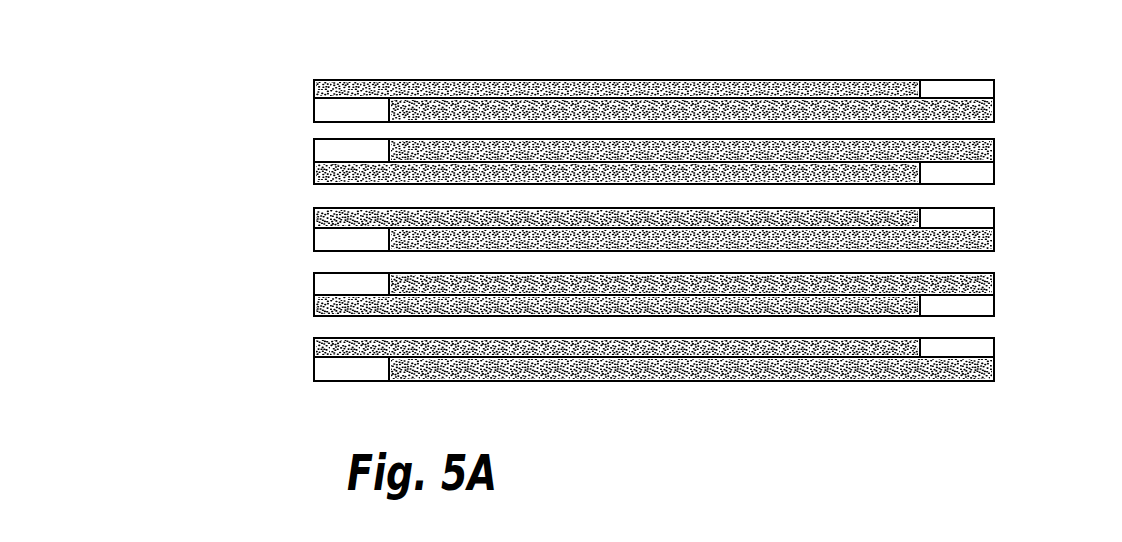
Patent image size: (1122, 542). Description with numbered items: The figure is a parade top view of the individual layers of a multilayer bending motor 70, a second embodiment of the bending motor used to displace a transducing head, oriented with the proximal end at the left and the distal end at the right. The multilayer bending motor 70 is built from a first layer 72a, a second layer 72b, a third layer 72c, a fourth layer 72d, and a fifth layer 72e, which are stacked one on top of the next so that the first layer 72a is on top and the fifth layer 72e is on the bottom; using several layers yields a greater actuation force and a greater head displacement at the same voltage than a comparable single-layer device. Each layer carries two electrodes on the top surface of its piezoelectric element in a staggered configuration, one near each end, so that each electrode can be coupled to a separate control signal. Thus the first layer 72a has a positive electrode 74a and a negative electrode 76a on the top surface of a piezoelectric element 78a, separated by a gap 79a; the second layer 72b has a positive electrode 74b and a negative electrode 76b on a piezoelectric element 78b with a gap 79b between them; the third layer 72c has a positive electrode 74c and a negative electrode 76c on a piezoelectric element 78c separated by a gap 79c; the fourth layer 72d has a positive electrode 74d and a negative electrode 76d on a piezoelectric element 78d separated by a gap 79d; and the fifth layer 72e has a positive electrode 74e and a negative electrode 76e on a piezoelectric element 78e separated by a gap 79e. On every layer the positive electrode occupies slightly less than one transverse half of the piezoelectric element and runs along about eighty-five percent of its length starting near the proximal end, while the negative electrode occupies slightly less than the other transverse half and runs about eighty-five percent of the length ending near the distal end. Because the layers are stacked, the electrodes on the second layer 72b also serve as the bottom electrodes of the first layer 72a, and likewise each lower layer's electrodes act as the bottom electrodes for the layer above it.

The multilayer bending motor 70 is at (392, 50).
The first layer 72a is at (621, 82).
The second layer 72b is at (619, 116).
The third layer 72c is at (619, 148).
The fourth layer 72d is at (624, 340).
The fifth layer 72e is at (621, 373).
The positive electrode 74a is at (331, 86).
The positive electrode 74b is at (316, 176).
The positive electrode 74c is at (315, 217).
The positive electrode 74d is at (316, 308).
The positive electrode 74e is at (316, 350).
The negative electrode 76a is at (990, 112).
The negative electrode 76b is at (990, 148).
The negative electrode 76c is at (992, 243).
The negative electrode 76d is at (993, 280).
The negative electrode 76e is at (992, 372).
The piezoelectric element 78a is at (982, 90).
The piezoelectric element 78b is at (987, 177).
The piezoelectric element 78c is at (982, 217).
The piezoelectric element 78d is at (985, 305).
The piezoelectric element 78e is at (988, 347).
The gap 79a is at (460, 101).
The gap 79b is at (499, 163).
The gap 79c is at (519, 231).
The gap 79d is at (598, 292).
The gap 79e is at (678, 357).